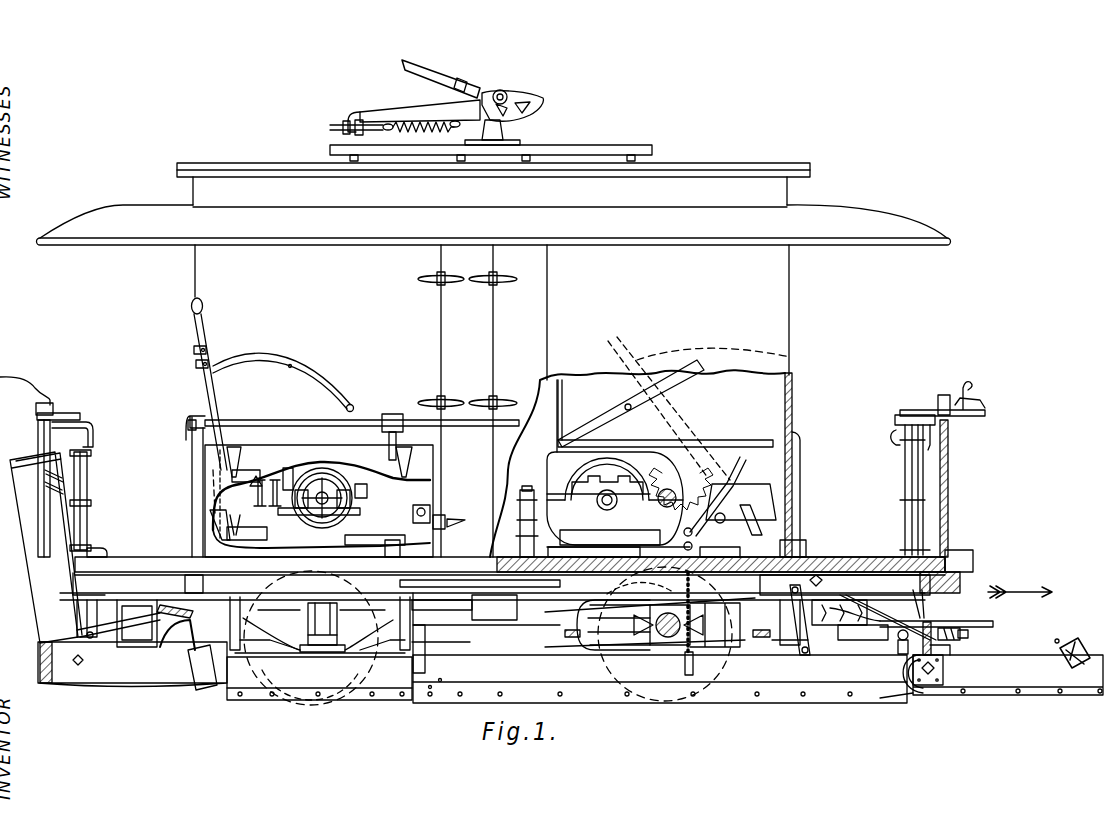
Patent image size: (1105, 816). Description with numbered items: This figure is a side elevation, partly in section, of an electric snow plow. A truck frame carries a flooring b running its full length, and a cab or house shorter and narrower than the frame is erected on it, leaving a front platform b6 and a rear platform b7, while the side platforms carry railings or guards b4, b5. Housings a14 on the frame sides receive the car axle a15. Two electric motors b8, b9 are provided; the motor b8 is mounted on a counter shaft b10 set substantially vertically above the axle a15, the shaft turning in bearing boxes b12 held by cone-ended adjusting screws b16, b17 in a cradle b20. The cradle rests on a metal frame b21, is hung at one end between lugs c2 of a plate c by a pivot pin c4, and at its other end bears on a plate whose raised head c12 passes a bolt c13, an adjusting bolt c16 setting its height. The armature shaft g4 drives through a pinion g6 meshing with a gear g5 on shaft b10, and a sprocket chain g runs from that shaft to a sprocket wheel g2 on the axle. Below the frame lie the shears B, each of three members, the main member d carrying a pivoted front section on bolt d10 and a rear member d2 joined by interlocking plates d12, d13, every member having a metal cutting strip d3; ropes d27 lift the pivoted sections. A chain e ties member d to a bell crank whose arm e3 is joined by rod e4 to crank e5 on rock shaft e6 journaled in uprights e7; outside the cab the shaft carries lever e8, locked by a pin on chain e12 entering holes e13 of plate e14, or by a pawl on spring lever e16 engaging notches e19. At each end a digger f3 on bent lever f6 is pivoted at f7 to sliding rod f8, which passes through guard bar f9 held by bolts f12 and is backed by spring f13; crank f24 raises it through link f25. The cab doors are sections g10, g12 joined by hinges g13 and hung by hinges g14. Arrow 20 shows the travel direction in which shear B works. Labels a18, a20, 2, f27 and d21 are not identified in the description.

The door section g12 is at (452, 331).
The door section g10 is at (511, 401).
The hinges g14 is at (420, 275).
The hinges g13 is at (482, 273).
The electric motor b9 is at (383, 415).
The pinion g6 is at (409, 462).
The spring actuated lever e16 is at (190, 305).
The lever or arm e8 is at (215, 402).
The chain e12 is at (195, 372).
The plate or bar e14 is at (725, 352).
The teeth or notches e19 is at (262, 356).
The holes e13 is at (290, 368).
The plate c is at (312, 487).
The gear g5 is at (343, 462).
The bearing boxes b12 is at (322, 478).
The adjusting screw b16 is at (290, 470).
The adjusting screw b17 is at (360, 485).
The bolt c13 is at (250, 483).
The adjusting bolt c16 is at (268, 480).
The pivot pin c4 is at (428, 500).
The lug c2 is at (432, 516).
The railing or guard b4 is at (192, 470).
The crank or arm e5 is at (220, 497).
The uprights e7 is at (225, 520).
The front platform b6 is at (158, 557).
The flooring b is at (492, 545).
The counter shaft b10 is at (660, 490).
The armature shaft g4 is at (600, 507).
The sprocket chain g is at (268, 655).
The electric motor b8 is at (575, 440).
The arm of bell crank lever e3 is at (730, 483).
The link or rod e4 is at (755, 480).
The rock shaft e6 is at (760, 505).
The raised portion or head c12 is at (726, 535).
The railing or guard b5 is at (800, 445).
The rear platform b7 is at (822, 557).
The floor a18 is at (452, 588).
The metal frame b21 is at (224, 567).
The adjustable supporting frame or cradle b20 is at (314, 567).
The bracket a20 is at (185, 590).
The frame member 2 is at (445, 590).
The brake bracket f27 is at (96, 552).
The curved or bent lever f6 is at (108, 605).
The digger f3 is at (195, 660).
The link f25 is at (172, 636).
The bolt d10 is at (80, 665).
The shear member or section d is at (135, 680).
The shear member or section d2 is at (287, 690).
The housings a14 is at (320, 625).
The interlocking plate, strap or bar d13 is at (378, 650).
The interlocking plate, strap or bar d12 is at (440, 650).
The scraper or shear B is at (758, 679).
The metallic strip d3 is at (763, 698).
The car axle a15 is at (632, 660).
The flexible connection e is at (671, 612).
The sprocket wheel g2 is at (627, 585).
The crank or arm f24 is at (815, 583).
The bolts f12 is at (819, 614).
The pivot f7 is at (896, 645).
The guard bar f9 is at (925, 630).
The sliding bar or rod f8 is at (962, 634).
The spiral spring f13 is at (948, 650).
The pin d21 is at (1055, 642).
The ropes d27 is at (1068, 645).
The arrow 20 is at (1020, 585).